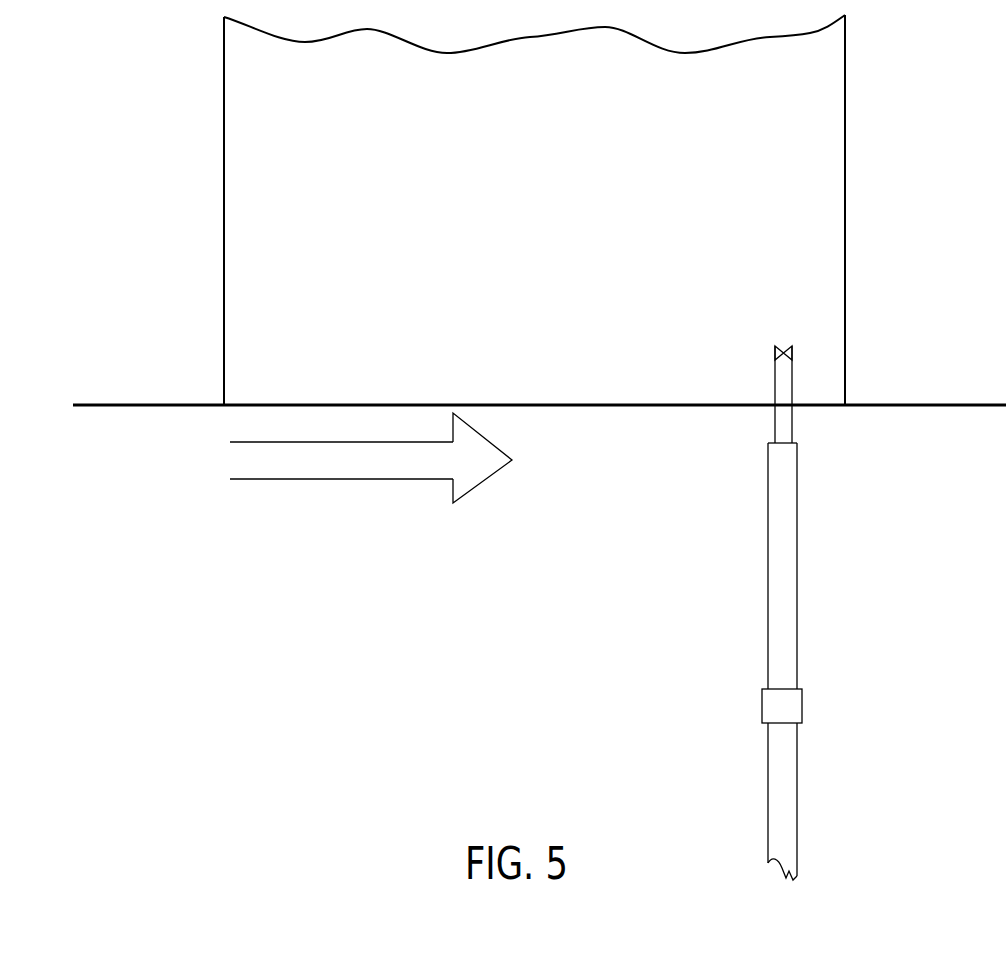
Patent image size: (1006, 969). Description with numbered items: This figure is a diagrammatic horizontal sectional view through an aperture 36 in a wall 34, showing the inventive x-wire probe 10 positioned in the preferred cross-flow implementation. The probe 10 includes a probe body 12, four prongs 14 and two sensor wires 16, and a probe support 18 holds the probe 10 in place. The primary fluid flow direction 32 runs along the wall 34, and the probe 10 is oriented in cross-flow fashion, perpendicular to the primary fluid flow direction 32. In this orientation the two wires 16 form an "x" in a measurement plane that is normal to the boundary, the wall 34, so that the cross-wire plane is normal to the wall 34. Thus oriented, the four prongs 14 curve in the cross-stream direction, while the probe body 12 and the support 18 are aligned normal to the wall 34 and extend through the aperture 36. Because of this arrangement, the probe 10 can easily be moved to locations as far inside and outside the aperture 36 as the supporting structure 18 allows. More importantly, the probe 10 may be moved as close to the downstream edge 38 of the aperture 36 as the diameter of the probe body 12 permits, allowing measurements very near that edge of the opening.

The x-wire probe 10 is at (801, 561).
The probe body 12 is at (762, 543).
The prongs 14 is at (775, 383).
The sensor wires 16 is at (785, 343).
The probe support 18 is at (762, 808).
The primary fluid flow direction 32 is at (371, 482).
The wall 34 is at (157, 408).
The aperture 36 is at (806, 155).
The downstream edge 38 is at (845, 353).